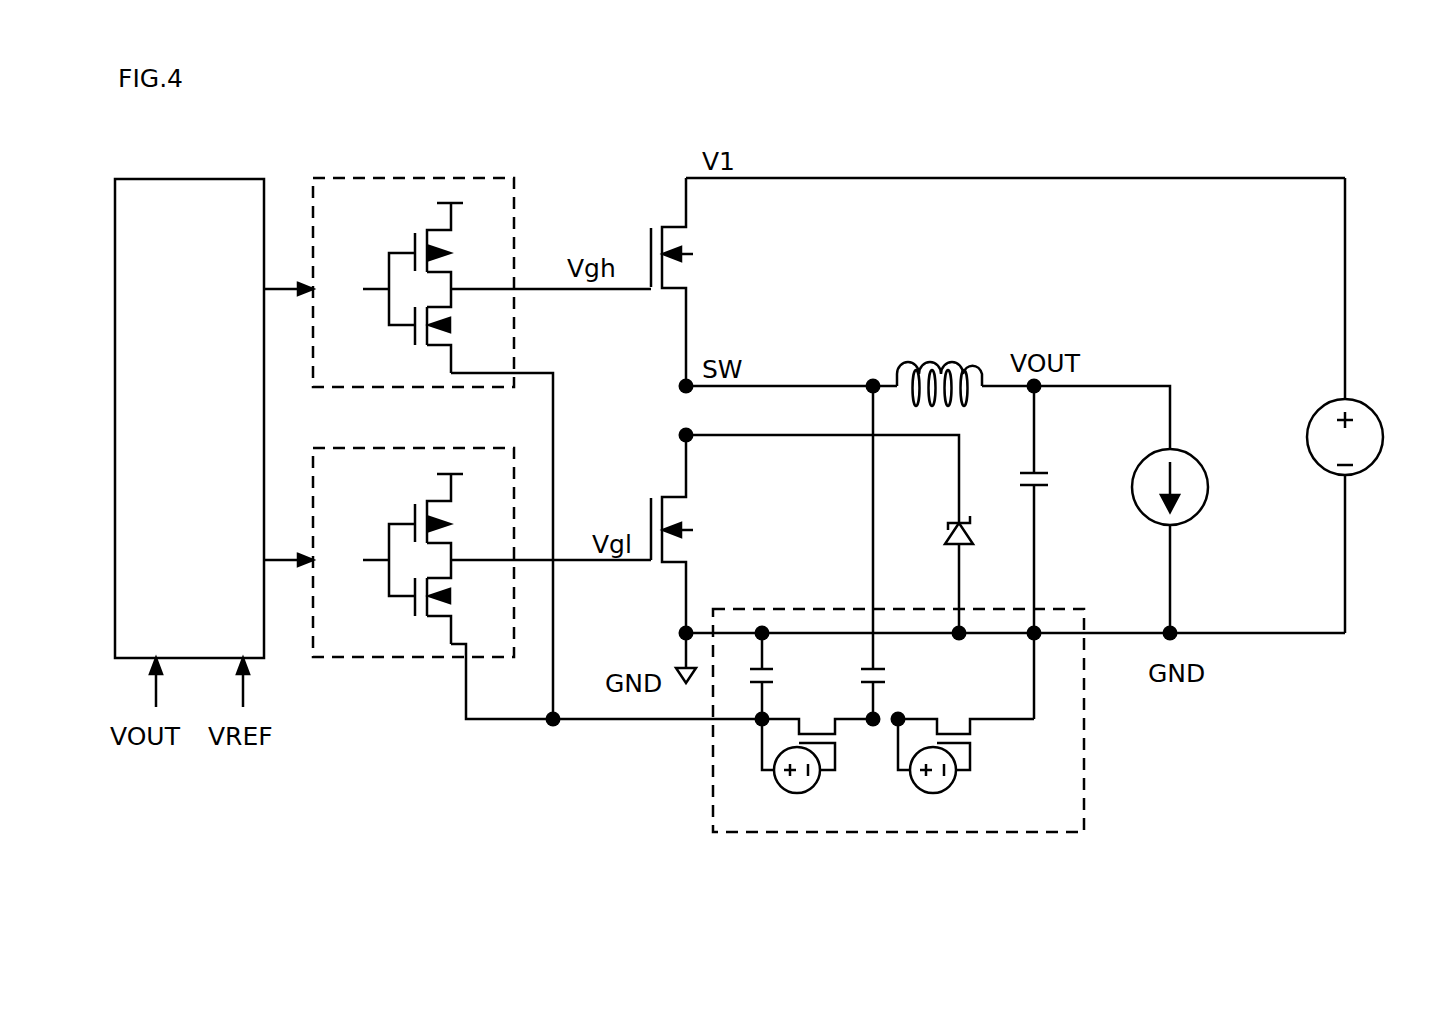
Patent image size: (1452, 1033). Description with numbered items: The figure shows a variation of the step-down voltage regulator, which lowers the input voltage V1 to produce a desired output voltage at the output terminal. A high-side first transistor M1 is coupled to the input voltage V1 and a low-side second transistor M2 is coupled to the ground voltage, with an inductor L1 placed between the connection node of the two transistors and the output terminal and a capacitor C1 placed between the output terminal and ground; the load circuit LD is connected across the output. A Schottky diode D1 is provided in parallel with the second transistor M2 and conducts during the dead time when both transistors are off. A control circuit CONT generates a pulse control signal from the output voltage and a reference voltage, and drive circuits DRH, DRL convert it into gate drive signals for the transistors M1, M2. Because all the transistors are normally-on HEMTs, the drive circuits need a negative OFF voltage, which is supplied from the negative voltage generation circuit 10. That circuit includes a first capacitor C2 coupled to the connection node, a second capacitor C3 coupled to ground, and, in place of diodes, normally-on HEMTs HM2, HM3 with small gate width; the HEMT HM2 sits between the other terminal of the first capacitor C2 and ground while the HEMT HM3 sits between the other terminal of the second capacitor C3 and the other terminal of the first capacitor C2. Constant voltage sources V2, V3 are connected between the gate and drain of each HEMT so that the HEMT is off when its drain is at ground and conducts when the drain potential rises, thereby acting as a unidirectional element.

The negative voltage generation circuit 10 is at (928, 721).
The control circuit CONT is at (189, 418).
The drive circuit DRH is at (413, 282).
The drive circuit DRL is at (413, 552).
The first transistor M1 is at (695, 282).
The second transistor M2 is at (695, 534).
The inductor L1 is at (939, 365).
The Schottky diode D1 is at (936, 535).
The capacitor C1 is at (1057, 488).
The first capacitor C2 is at (891, 686).
The second capacitor C3 is at (780, 678).
The load circuit LD is at (1194, 487).
The input voltage V1 is at (1369, 437).
The HEMT HM2 is at (970, 748).
The HEMT HM3 is at (817, 730).
The constant voltage source V2 is at (928, 776).
The constant voltage source V3 is at (792, 776).